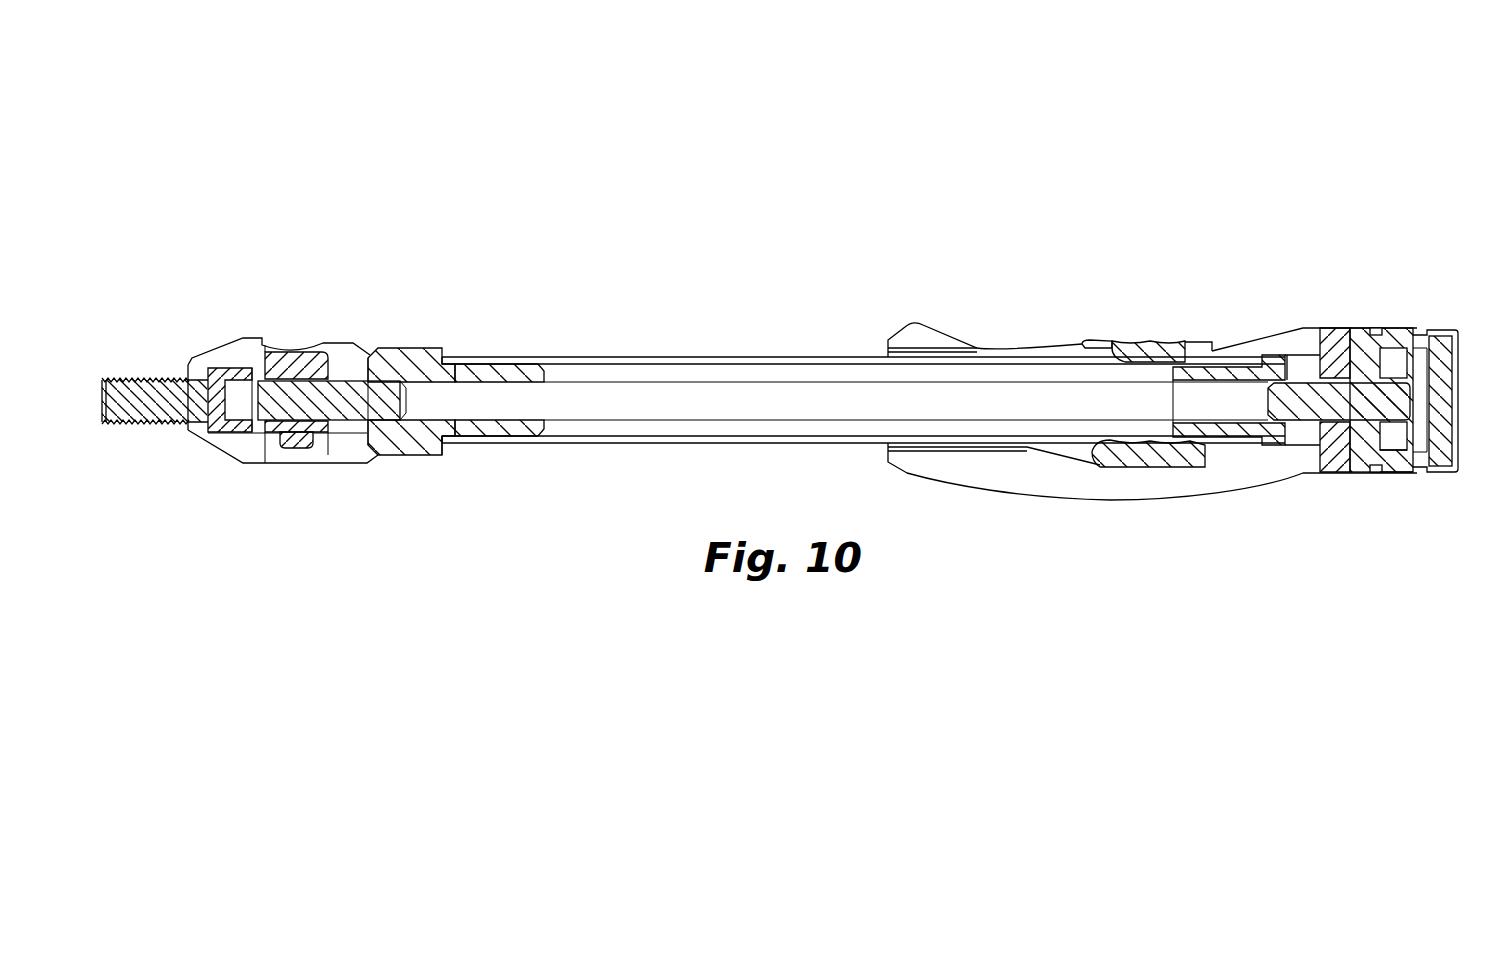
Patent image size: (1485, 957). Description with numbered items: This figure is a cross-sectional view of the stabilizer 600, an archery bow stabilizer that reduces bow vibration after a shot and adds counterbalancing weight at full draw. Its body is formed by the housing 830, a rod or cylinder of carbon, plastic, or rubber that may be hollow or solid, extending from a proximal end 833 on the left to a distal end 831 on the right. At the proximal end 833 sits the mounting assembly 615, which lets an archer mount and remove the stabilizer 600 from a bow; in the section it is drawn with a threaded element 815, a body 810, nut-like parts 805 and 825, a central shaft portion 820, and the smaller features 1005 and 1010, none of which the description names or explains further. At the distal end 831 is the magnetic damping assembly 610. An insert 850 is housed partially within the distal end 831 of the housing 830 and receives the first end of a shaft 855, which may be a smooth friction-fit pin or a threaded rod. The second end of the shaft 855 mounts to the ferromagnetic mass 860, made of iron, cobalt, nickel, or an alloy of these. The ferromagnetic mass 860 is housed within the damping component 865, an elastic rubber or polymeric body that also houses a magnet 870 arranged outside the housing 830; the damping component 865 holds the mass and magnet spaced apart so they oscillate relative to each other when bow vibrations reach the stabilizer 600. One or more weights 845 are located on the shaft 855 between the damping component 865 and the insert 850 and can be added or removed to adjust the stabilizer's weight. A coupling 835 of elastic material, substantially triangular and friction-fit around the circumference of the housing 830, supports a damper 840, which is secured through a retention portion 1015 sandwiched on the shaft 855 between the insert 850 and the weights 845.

The stabilizer 600 is at (1003, 132).
The magnetic damping assembly 610 is at (1357, 263).
The mounting assembly 615 is at (368, 258).
The ferrule 805 is at (290, 350).
The cap body 810 is at (247, 465).
The threaded bolt 815 is at (122, 427).
The shaft 820 is at (348, 432).
The nut 825 is at (410, 347).
The housing 830 is at (708, 357).
The distal end 831 is at (1232, 352).
The proximal end 833 is at (457, 457).
The coupling 835 is at (1117, 452).
The damper 840 is at (1092, 503).
The weights 845 is at (1335, 475).
The insert 850 is at (1265, 440).
The shaft 855 is at (1298, 340).
The ferromagnetic mass 860 is at (1405, 340).
The damping component 865 is at (1400, 475).
The magnet 870 is at (1450, 335).
The cavity 1005 is at (293, 452).
The seal 1010 is at (312, 449).
The retention portion 1015 is at (1302, 452).